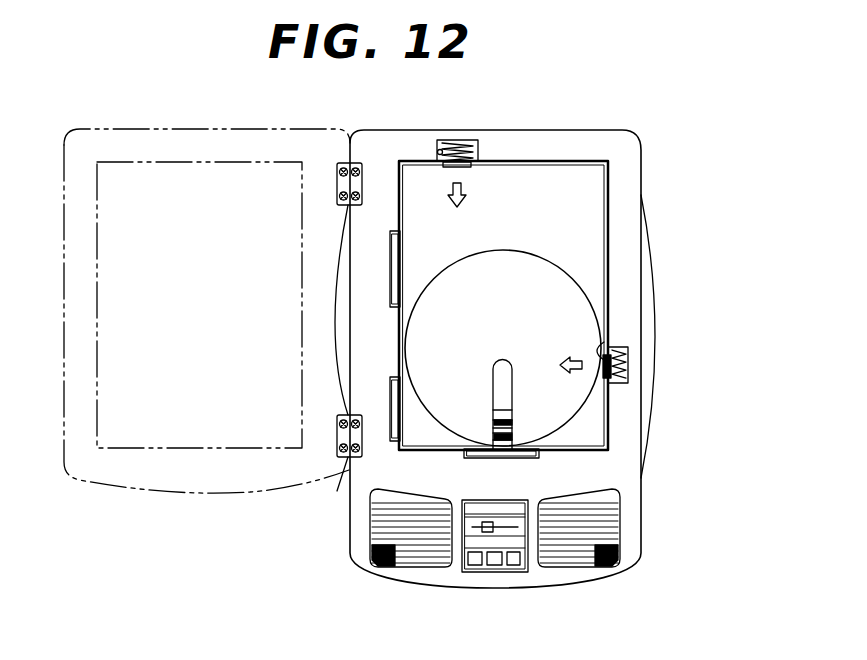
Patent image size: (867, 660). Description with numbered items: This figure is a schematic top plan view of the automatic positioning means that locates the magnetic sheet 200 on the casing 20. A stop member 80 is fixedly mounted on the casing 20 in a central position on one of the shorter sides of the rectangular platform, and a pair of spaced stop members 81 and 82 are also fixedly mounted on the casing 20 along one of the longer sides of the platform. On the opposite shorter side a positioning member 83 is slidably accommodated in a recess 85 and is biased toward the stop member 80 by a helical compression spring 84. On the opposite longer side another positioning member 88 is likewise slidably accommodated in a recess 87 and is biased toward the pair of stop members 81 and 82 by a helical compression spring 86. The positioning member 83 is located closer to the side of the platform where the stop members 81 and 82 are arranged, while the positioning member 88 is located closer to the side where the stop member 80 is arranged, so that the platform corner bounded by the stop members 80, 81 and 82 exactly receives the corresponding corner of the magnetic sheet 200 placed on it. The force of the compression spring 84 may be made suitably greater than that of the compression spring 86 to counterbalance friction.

The casing 20 is at (628, 436).
The magnetic sheet 200 is at (603, 196).
The stop member 80 is at (519, 455).
The stop member 81 is at (390, 437).
The stop member 82 is at (392, 233).
The positioning member 83 is at (470, 170).
The helical compression spring 84 is at (457, 147).
The recess 85 is at (437, 150).
The helical compression spring 86 is at (628, 367).
The recess 87 is at (623, 347).
The positioning member 88 is at (602, 343).